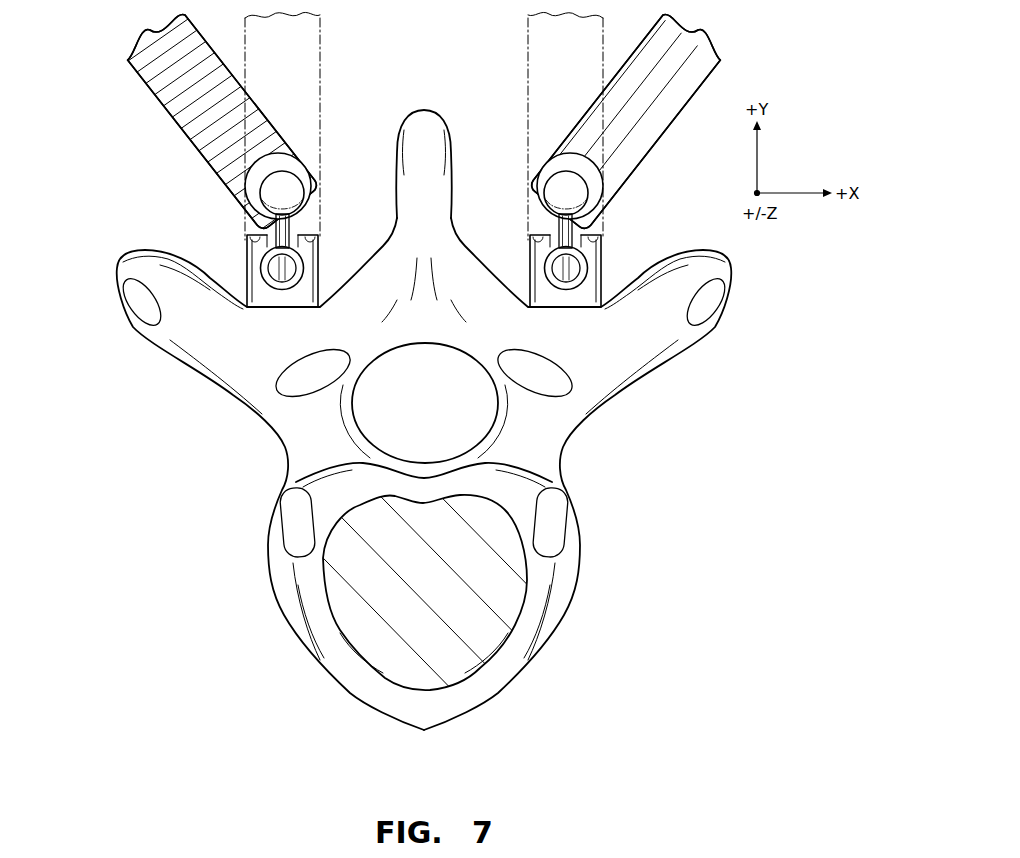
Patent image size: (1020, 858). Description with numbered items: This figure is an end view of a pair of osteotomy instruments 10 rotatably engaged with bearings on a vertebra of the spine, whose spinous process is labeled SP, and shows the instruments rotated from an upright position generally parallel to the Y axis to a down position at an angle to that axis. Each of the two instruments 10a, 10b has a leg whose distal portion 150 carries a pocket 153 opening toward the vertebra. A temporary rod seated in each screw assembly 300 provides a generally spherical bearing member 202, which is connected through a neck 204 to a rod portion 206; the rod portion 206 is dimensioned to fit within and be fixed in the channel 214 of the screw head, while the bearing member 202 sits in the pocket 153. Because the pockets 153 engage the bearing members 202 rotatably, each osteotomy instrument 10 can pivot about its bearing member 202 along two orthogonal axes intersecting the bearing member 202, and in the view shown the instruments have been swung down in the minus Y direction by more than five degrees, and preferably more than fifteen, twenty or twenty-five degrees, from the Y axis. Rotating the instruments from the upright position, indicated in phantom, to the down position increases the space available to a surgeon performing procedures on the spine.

The osteotomy instrument 10 is at (464, 121).
The first fixation assembly 10a is at (165, 127).
The second fixation assembly 10b is at (724, 76).
The distal portion 150 is at (156, 98).
The second pocket 153 is at (252, 188).
The bearing member 202 is at (288, 184).
The neck 204 is at (293, 220).
The rod portion 206 is at (300, 277).
The bore 214 is at (268, 268).
The connector 300 is at (420, 247).
The spinous process SP is at (425, 100).